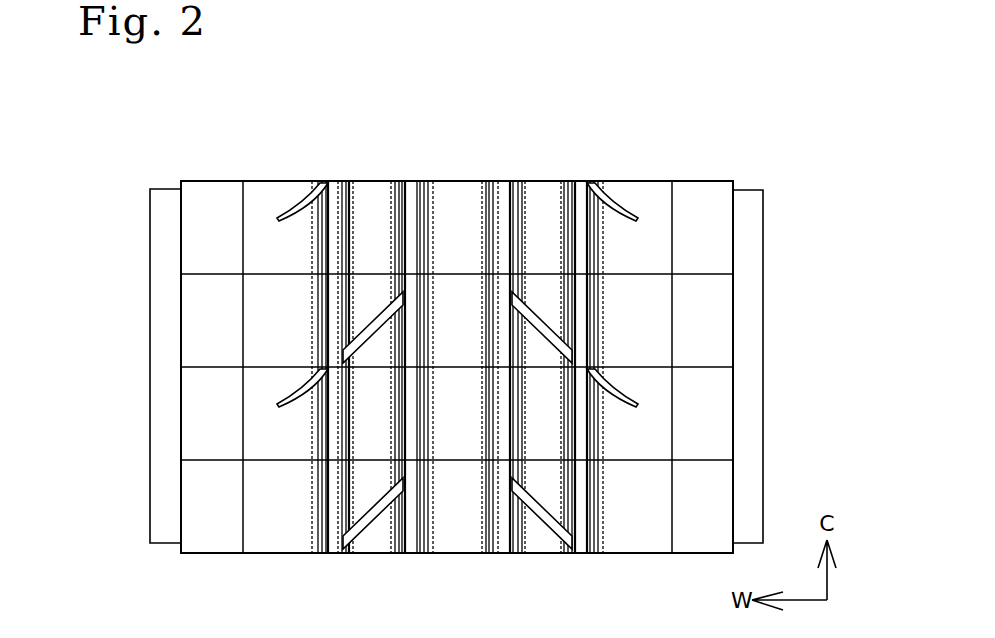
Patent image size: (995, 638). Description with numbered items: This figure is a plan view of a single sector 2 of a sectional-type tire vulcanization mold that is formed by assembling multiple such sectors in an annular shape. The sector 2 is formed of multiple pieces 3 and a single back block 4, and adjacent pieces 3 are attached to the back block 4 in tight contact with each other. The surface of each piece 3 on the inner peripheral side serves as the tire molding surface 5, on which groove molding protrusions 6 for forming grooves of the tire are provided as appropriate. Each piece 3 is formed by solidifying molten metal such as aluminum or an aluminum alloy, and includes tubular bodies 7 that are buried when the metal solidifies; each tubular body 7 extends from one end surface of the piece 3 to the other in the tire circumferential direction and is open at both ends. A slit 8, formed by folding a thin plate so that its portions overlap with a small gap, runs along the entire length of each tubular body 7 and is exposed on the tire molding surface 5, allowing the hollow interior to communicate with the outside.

The sector 2 is at (656, 176).
The piece 3 is at (163, 243).
The back block 4 is at (172, 208).
The tire molding surface 5 is at (275, 197).
The groove molding protrusion 6 is at (333, 186).
The tubular body 7 is at (352, 185).
The slit 8 is at (317, 555).